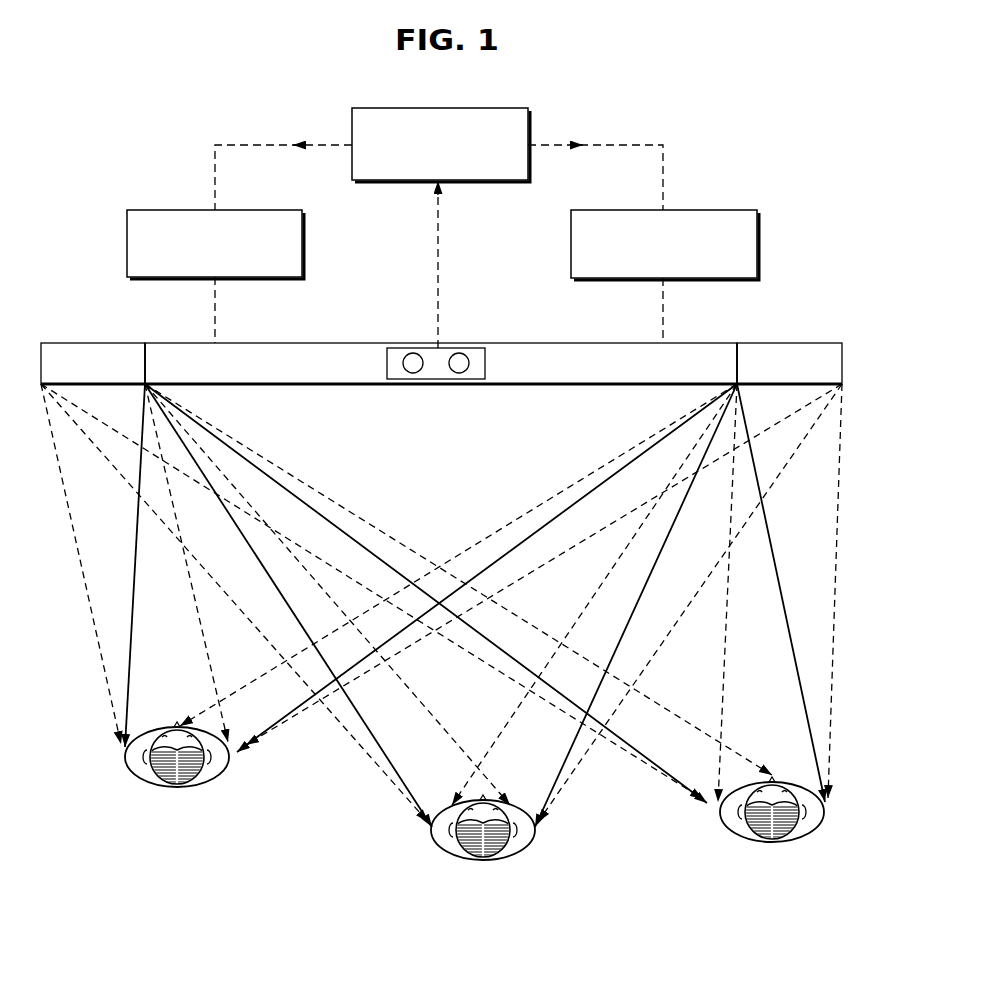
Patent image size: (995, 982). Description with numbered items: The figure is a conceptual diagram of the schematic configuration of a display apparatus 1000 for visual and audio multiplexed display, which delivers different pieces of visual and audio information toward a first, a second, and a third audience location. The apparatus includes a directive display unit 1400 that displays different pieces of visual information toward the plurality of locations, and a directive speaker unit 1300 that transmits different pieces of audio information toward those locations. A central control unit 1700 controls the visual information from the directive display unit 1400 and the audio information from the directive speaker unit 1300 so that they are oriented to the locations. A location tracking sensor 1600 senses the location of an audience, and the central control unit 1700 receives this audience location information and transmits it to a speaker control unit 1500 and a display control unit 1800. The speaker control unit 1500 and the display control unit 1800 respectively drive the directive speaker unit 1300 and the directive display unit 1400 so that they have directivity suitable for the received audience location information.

The display apparatus 1000 is at (651, 103).
The directive speaker unit 1300 is at (92, 352).
The directive display unit 1400 is at (699, 352).
The speaker control unit 1500 is at (700, 210).
The location tracking sensor 1600 is at (466, 348).
The central control unit 1700 is at (493, 183).
The display control unit 1800 is at (163, 210).